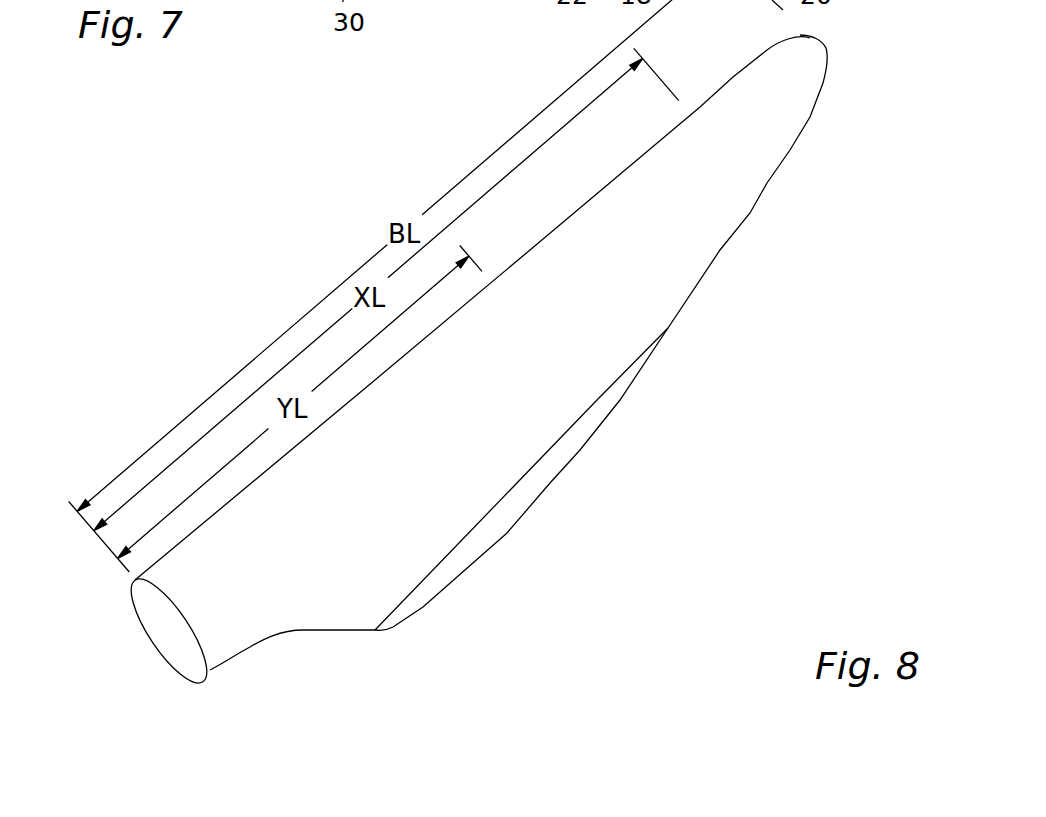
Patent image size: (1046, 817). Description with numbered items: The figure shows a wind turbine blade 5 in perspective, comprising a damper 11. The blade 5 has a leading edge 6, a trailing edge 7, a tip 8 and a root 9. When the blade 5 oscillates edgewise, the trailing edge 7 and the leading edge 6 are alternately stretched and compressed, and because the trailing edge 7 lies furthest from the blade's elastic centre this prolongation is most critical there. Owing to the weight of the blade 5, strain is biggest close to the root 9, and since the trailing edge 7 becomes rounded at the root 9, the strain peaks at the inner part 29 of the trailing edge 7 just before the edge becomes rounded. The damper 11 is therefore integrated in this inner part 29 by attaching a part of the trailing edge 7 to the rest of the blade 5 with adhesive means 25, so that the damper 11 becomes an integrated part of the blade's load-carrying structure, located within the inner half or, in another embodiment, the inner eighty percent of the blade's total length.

The wind turbine blade 5 is at (488, 346).
The leading edge 6 is at (573, 208).
The trailing edge 7 is at (750, 215).
The tip 8 is at (827, 50).
The root 9 is at (168, 620).
The damper 11 is at (503, 523).
The adhesive means 25 is at (572, 423).
The inner part of the trailing edge 29 is at (548, 470).